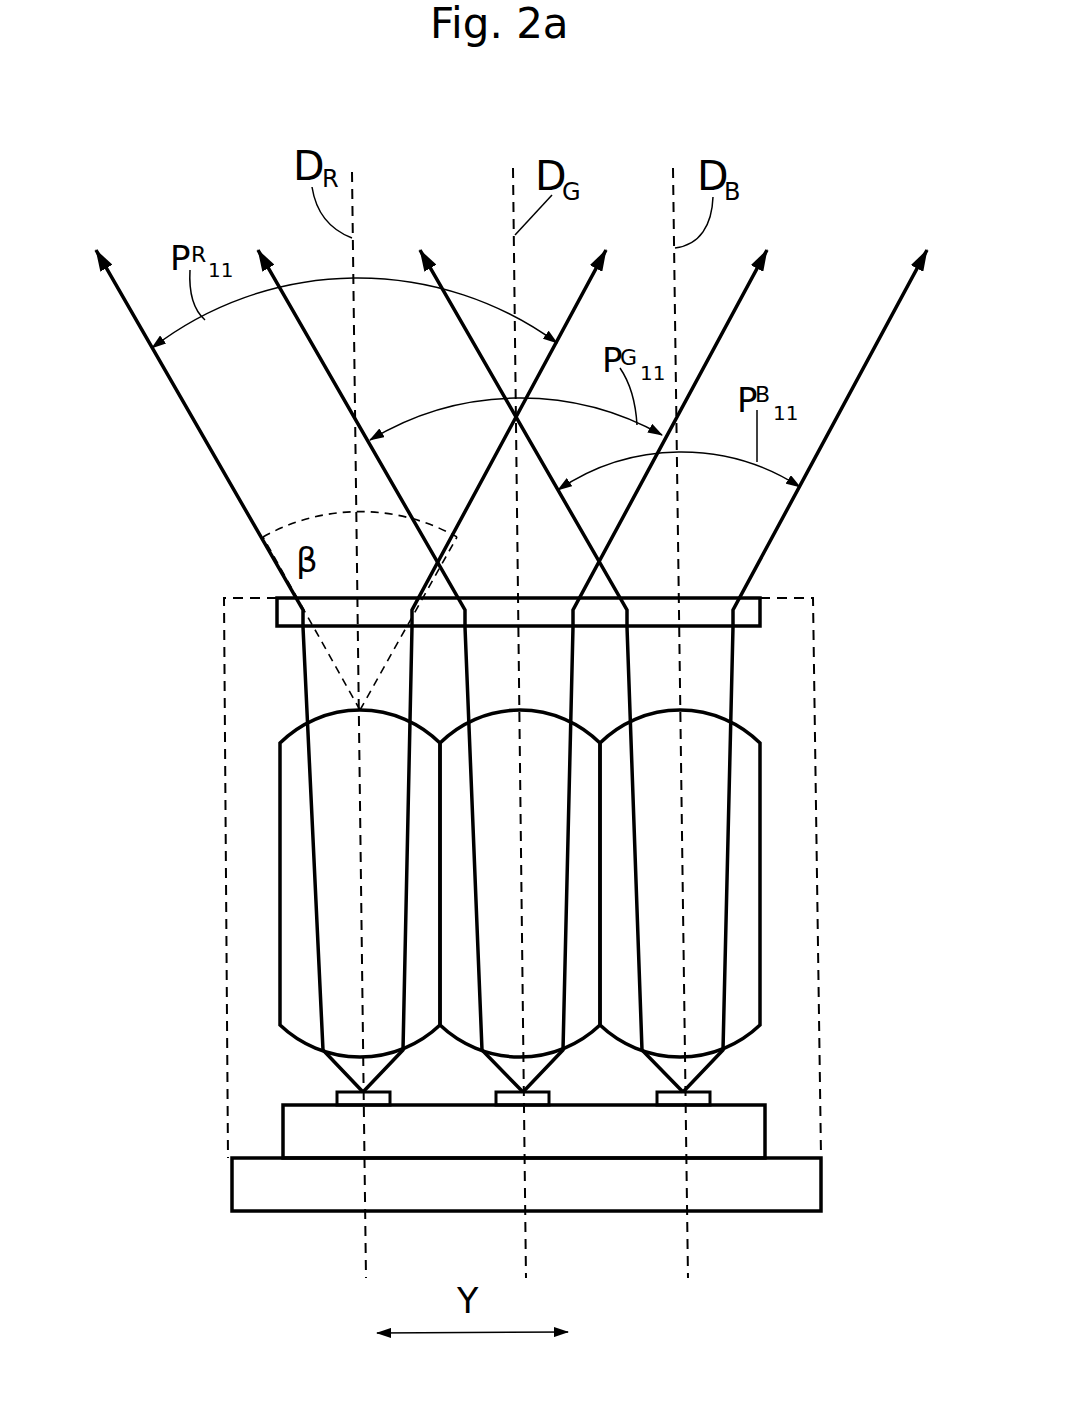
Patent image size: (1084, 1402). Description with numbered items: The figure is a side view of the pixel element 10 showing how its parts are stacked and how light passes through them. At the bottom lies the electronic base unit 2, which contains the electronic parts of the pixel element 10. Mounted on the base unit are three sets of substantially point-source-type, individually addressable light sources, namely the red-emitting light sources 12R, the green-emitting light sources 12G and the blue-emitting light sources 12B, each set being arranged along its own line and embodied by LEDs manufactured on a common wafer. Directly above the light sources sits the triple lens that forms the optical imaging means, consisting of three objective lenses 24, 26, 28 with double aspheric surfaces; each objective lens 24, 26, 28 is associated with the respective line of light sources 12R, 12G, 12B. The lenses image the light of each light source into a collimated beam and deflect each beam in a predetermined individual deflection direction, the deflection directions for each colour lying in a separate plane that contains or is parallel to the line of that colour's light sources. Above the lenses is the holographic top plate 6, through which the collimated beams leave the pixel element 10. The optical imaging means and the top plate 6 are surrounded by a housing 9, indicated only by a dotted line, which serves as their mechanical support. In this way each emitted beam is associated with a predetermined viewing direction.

The electronic base unit 2 is at (807, 1182).
The holographic top plate 6 is at (748, 608).
The housing 9 is at (820, 902).
The pixel element 10 is at (825, 1230).
The set of light sources emitting red light 12R is at (348, 1107).
The set of light sources emitting green light 12G is at (550, 1105).
The set of light sources emitting blue light 12B is at (714, 1088).
The objective lens 24 is at (330, 715).
The objective lens 26 is at (548, 715).
The objective lens 28 is at (712, 714).